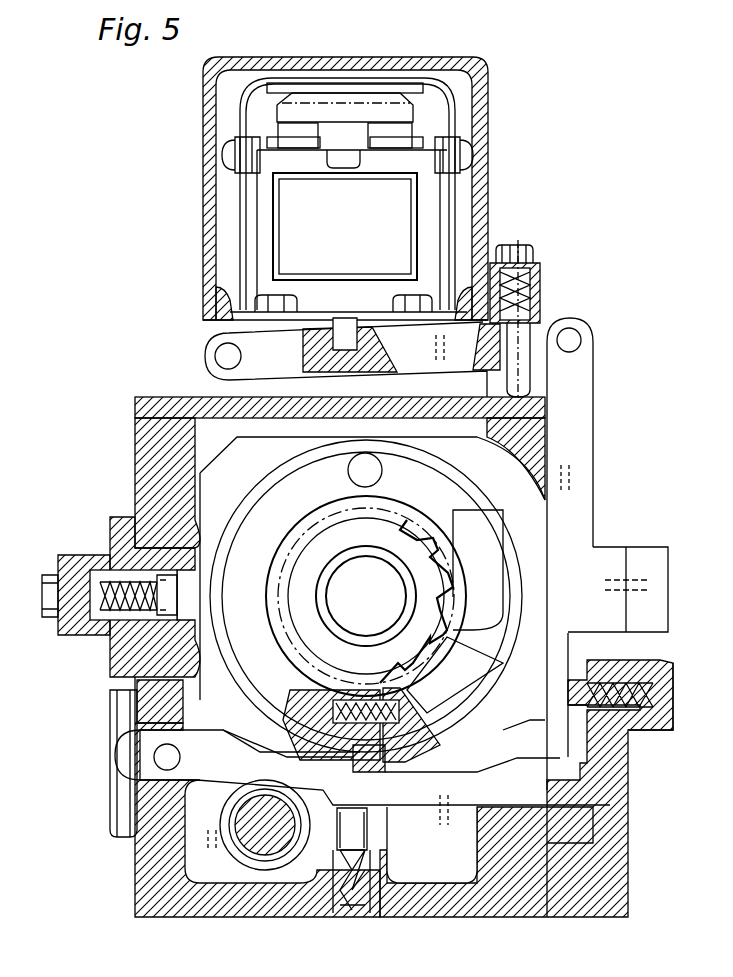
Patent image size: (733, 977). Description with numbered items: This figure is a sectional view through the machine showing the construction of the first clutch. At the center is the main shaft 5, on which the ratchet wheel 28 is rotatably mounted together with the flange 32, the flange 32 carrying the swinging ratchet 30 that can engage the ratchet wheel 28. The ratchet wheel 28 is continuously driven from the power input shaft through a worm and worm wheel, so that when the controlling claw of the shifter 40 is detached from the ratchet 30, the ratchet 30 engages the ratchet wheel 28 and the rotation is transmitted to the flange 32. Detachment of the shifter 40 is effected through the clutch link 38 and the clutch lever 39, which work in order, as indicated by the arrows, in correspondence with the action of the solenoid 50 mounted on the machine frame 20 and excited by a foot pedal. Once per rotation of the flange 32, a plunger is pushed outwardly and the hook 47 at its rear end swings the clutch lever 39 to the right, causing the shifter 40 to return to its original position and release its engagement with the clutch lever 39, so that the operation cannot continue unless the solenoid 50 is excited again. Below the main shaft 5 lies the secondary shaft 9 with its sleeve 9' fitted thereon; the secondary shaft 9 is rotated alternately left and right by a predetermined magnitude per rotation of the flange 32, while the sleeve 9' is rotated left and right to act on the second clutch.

The main shaft 5 is at (371, 605).
The secondary shaft 9 is at (265, 864).
The sleeve 9' is at (251, 872).
The machine frame 20 is at (140, 435).
The ratchet wheel 28 is at (296, 644).
The swinging ratchet 30 is at (242, 533).
The flange 32 is at (518, 606).
The clutch link 38 is at (245, 336).
The clutch lever 39 is at (582, 390).
The shifter 40 is at (406, 802).
The hook 47 is at (639, 555).
The solenoid 50 is at (356, 226).